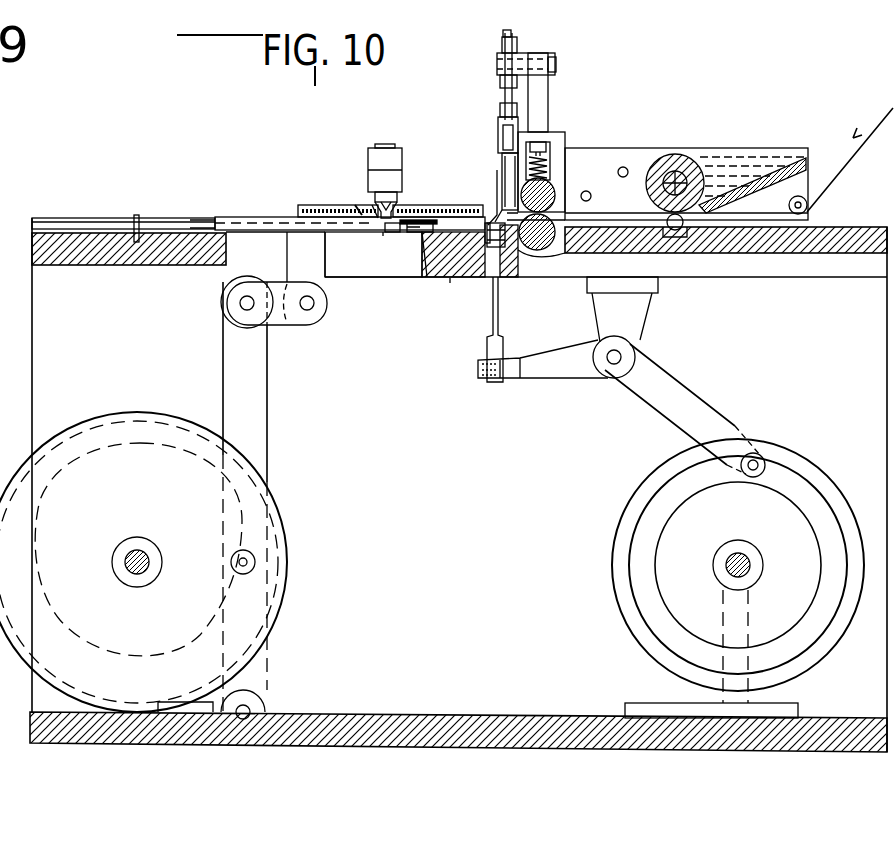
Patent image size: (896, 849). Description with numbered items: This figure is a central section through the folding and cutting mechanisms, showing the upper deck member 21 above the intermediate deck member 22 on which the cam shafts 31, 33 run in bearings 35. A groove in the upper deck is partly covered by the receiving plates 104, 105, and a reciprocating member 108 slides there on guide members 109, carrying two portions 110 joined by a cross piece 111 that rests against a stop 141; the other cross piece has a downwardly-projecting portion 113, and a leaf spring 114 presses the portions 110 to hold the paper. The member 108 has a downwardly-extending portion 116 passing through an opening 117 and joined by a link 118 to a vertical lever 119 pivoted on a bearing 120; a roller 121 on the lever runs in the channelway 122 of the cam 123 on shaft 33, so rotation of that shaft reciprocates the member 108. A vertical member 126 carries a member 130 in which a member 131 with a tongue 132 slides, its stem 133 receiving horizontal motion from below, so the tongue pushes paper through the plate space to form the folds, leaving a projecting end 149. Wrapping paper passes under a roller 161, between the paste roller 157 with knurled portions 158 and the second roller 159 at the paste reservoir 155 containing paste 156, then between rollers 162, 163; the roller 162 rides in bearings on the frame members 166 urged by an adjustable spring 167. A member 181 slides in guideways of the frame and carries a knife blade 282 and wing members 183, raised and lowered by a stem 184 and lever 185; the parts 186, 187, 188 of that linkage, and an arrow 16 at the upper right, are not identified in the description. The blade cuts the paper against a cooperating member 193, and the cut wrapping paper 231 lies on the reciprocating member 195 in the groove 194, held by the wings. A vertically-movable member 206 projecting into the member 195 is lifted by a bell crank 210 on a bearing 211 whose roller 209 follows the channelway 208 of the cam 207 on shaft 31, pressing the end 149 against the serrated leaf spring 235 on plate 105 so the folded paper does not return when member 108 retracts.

The web or strip feed direction 16 is at (880, 140).
The upper deck member 21 is at (33, 258).
The intermediate deck member 22 is at (345, 716).
The shaft 31 is at (748, 562).
The shaft 33 is at (150, 560).
The bearings 35 is at (790, 708).
The receiving plate 104 is at (306, 207).
The receiving plate 105 is at (430, 207).
The reciprocating member 108 is at (262, 250).
The guide members 109 is at (99, 218).
The portions of second reciprocating member 110 is at (200, 220).
The cross piece 111 is at (188, 220).
The downwardly-projecting portion 113 is at (422, 268).
The leaf spring 114 is at (382, 237).
The downwardly-extending portion 116 is at (315, 268).
The opening 117 is at (412, 234).
The link 118 is at (283, 326).
The vertical lever 119 is at (264, 408).
The bearing 120 is at (190, 712).
The roller 121 is at (252, 556).
The channelway 122 is at (178, 424).
The cam 123 is at (98, 414).
The vertical member 126 is at (405, 200).
The member 130 is at (395, 150).
The member 131 is at (400, 175).
The tongue 132 is at (372, 205).
The stem 133 is at (383, 233).
The stop 141 is at (135, 214).
The projecting end 149 is at (355, 205).
The paste reservoir 155 is at (796, 158).
The paste 156 is at (728, 172).
The paste roller 157 is at (688, 170).
The knurled portions 158 is at (672, 157).
The second roller 159 is at (678, 232).
The roller 161 is at (808, 207).
The roller 162 is at (566, 155).
The roller 163 is at (548, 262).
The frame members 166 is at (567, 148).
The adjustable spring 167 is at (550, 168).
The member 181 is at (503, 150).
The wing members 183 is at (499, 168).
The stem 184 is at (503, 88).
The lever 185 is at (520, 62).
The post 186 is at (540, 80).
The nut 187 is at (556, 65).
The adjusting screw 188 is at (503, 45).
The cooperating member 193 is at (512, 262).
The groove 194 is at (478, 270).
The reciprocating member 195 is at (491, 280).
The vertically-movable member 206 is at (500, 338).
The cam 207 is at (808, 462).
The channelway 208 is at (822, 500).
The roller 209 is at (766, 455).
The bell crank 210 is at (697, 398).
The bearing 211 is at (640, 328).
The wrapping paper 231 is at (450, 283).
The leaf spring 235 is at (460, 205).
The knife blade 282 is at (494, 218).